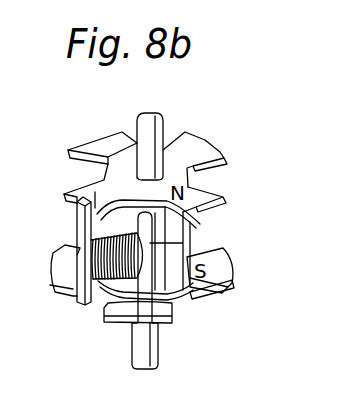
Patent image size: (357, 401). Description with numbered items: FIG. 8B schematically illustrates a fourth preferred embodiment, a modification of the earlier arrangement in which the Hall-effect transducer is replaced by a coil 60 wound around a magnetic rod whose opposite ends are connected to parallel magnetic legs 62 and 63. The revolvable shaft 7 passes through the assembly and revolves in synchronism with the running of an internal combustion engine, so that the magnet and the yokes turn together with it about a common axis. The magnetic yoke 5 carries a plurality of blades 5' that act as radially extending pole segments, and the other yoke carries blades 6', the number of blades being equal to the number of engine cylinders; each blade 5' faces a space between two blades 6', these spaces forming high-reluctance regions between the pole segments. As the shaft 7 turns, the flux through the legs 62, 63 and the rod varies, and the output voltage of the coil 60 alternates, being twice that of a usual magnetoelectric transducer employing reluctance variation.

The magnetic yoke 5 is at (153, 306).
The blades 5' is at (163, 298).
The blades 6' is at (159, 171).
The revolvable shaft 7 is at (164, 122).
The coil 60 is at (103, 240).
The magnetic leg 62 is at (78, 224).
The magnetic leg 63 is at (152, 238).